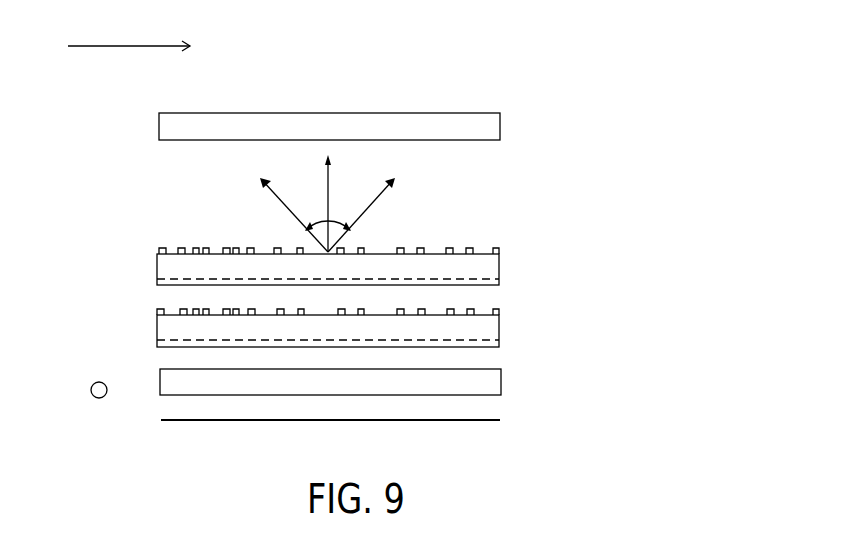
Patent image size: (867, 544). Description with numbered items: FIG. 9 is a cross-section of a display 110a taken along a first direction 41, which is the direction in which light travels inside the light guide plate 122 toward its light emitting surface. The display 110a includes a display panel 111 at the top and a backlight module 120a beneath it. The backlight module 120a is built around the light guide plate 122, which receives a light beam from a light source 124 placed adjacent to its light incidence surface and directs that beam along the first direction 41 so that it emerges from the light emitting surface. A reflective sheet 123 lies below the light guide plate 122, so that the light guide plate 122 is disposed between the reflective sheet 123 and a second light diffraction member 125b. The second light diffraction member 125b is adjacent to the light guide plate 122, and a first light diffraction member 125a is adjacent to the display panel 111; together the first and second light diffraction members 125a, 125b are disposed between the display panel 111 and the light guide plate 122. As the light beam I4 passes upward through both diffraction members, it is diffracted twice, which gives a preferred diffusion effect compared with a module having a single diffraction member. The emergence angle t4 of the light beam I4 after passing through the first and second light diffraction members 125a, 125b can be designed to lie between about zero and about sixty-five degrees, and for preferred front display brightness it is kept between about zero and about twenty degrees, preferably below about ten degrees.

The first direction 41 is at (148, 47).
The display 110a is at (664, 76).
The display panel 111 is at (500, 125).
The light beam I4 is at (327, 203).
The emergence angle t4 is at (326, 211).
The backlight module 120a is at (402, 273).
The first light diffraction member 125a is at (481, 263).
The second light diffraction member 125b is at (482, 325).
The light guide plate 122 is at (501, 383).
The reflective sheet 123 is at (500, 420).
The light source 124 is at (99, 382).